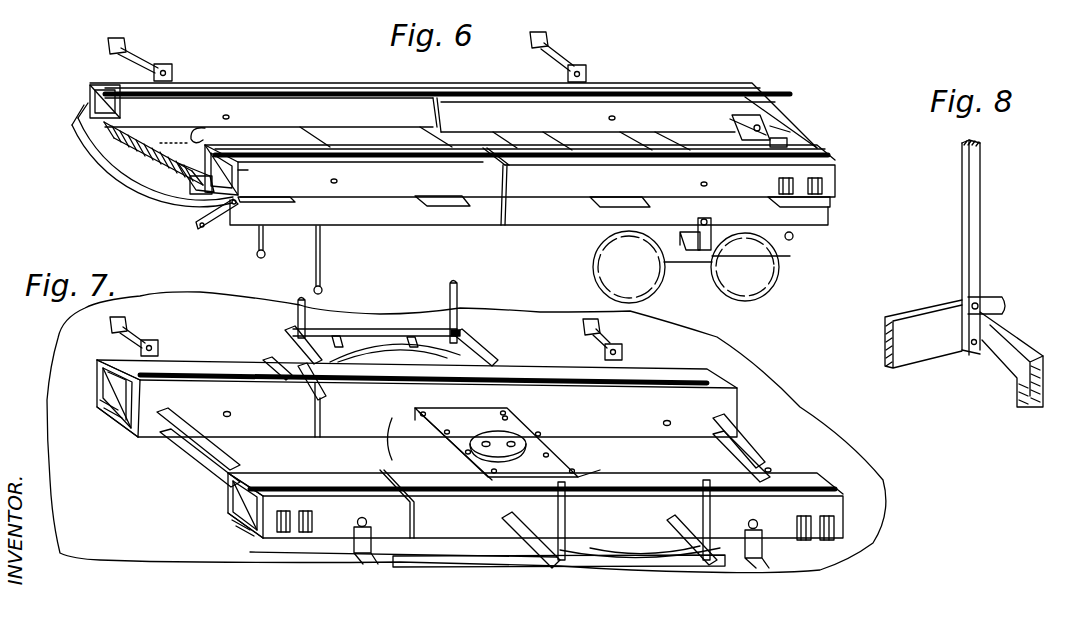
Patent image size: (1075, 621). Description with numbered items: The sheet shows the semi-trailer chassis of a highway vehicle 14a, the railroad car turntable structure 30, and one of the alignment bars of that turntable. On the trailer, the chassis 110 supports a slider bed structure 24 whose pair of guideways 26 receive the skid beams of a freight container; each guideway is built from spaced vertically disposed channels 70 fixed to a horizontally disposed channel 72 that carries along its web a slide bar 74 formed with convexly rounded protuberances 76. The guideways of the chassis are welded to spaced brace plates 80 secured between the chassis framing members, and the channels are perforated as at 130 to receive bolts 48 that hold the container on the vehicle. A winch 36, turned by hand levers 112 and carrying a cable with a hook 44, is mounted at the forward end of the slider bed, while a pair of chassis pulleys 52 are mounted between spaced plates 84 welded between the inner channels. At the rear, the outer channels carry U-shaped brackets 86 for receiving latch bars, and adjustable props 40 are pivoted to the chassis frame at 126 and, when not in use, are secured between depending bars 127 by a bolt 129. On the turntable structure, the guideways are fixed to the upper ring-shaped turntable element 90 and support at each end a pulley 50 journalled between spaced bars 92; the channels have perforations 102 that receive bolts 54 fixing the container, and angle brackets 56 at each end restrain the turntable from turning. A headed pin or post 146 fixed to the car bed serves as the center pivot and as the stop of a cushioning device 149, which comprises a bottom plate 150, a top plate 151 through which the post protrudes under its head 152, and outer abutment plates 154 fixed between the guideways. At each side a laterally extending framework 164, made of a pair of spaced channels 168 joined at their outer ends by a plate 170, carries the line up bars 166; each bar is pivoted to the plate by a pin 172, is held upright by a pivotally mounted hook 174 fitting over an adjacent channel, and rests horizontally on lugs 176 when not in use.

In FIG. 6, the highway vehicle 14a is at (71, 177).
In FIG. 6, the slider bed structure 24 is at (194, 74).
In FIG. 7, the slider bed structure 24 is at (204, 350).
In FIG. 6, the guideways 26 is at (80, 100).
In FIG. 7, the guideways 26 is at (98, 385).
In FIG. 7, the turntable structure 30 is at (142, 516).
In FIG. 6, the winch 36 is at (140, 165).
In FIG. 6, the adjustable props 40 is at (770, 255).
In FIG. 6, the hook 44 is at (204, 130).
In FIG. 6, the bolts 48 is at (146, 62).
In FIG. 7, the pulley 50 is at (212, 476).
In FIG. 6, the chassis pulleys 52 is at (790, 141).
In FIG. 7, the bolts 54 is at (136, 336).
In FIG. 7, the angle brackets 56 is at (350, 550).
In FIG. 6, the channels 70 is at (98, 84).
In FIG. 7, the channels 70 is at (118, 362).
In FIG. 7, the horizontally disposed channel 72 is at (104, 400).
In FIG. 6, the slide bar 74 is at (242, 173).
In FIG. 7, the slide bar 74 is at (112, 414).
In FIG. 7, the protuberances 76 is at (122, 398).
In FIG. 6, the brace plates 80 is at (337, 136).
In FIG. 6, the plates 84 is at (746, 114).
In FIG. 6, the U-shaped brackets 86 is at (822, 184).
In FIG. 7, the U-shaped brackets 86 is at (304, 509).
In FIG. 7, the upper turntable element 90 is at (424, 356).
In FIG. 7, the bars 92 is at (205, 442).
In FIG. 7, the perforations 102 is at (231, 414).
In FIG. 6, the chassis 110 is at (296, 226).
In FIG. 6, the hand levers 112 is at (199, 226).
In FIG. 6, the pivot 126 is at (796, 237).
In FIG. 6, the bars 127 is at (712, 222).
In FIG. 6, the bolt 129 is at (712, 242).
In FIG. 6, the perforations 130 is at (228, 115).
In FIG. 7, the headed pin or post 146 is at (481, 427).
In FIG. 7, the cushioning device 149 is at (508, 414).
In FIG. 7, the bottom plate 150 is at (612, 468).
In FIG. 7, the top plate 151 is at (552, 452).
In FIG. 7, the head 152 is at (512, 444).
In FIG. 7, the abutment plates 154 is at (414, 430).
In FIG. 7, the framework 164 is at (274, 341).
In FIG. 7, the line up bars 166 is at (298, 306).
In FIG. 8, the line up bars 166 is at (982, 188).
In FIG. 7, the channels 168 is at (585, 441).
In FIG. 8, the channels 168 is at (1026, 348).
In FIG. 7, the plate 170 is at (387, 331).
In FIG. 8, the plate 170 is at (910, 368).
In FIG. 8, the pin 172 is at (968, 356).
In FIG. 8, the hook 174 is at (982, 296).
In FIG. 7, the lugs 176 is at (335, 338).